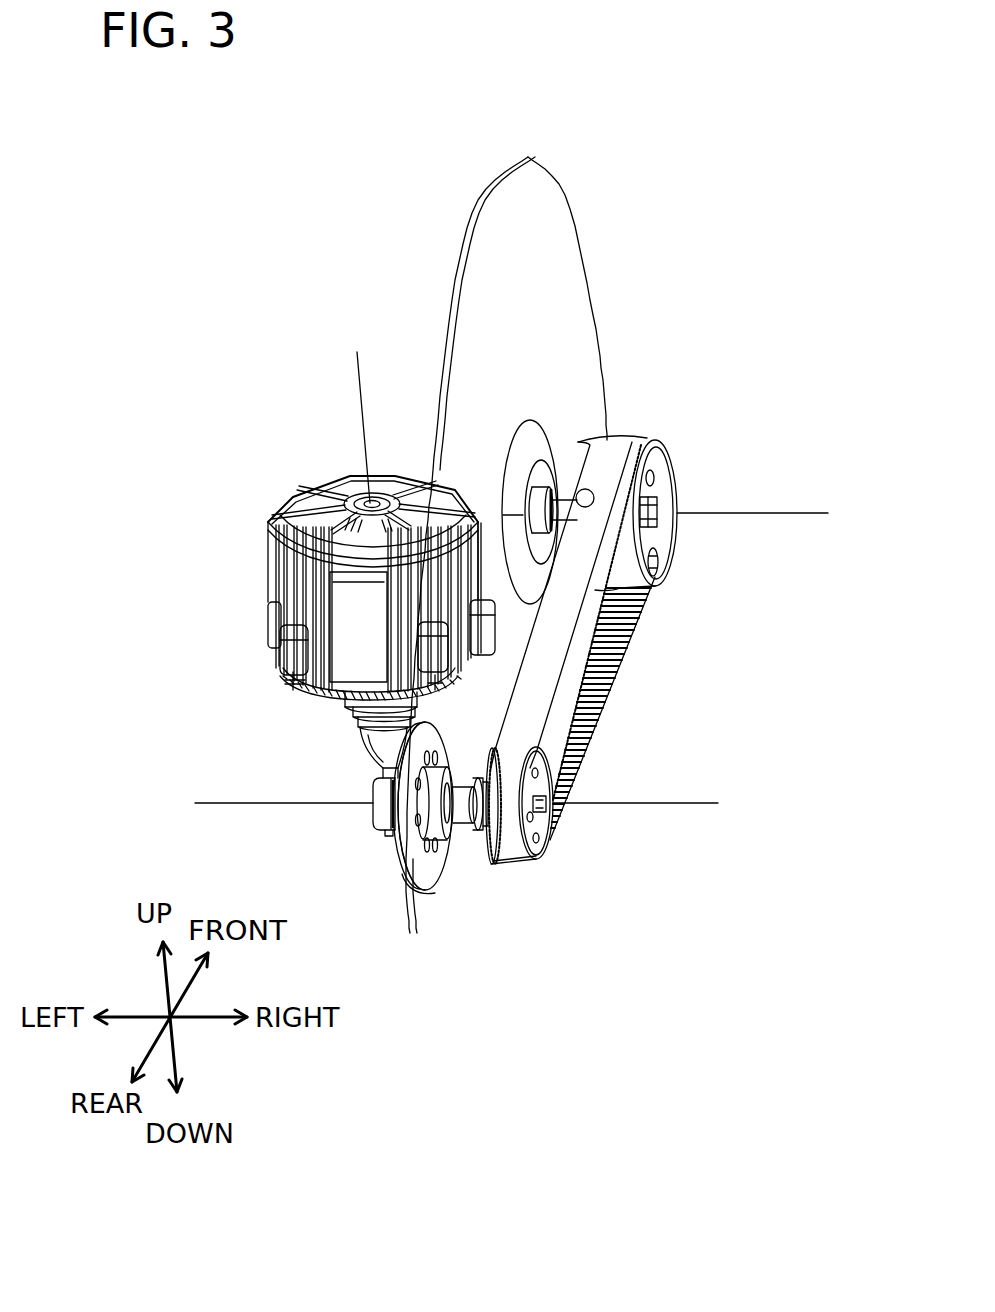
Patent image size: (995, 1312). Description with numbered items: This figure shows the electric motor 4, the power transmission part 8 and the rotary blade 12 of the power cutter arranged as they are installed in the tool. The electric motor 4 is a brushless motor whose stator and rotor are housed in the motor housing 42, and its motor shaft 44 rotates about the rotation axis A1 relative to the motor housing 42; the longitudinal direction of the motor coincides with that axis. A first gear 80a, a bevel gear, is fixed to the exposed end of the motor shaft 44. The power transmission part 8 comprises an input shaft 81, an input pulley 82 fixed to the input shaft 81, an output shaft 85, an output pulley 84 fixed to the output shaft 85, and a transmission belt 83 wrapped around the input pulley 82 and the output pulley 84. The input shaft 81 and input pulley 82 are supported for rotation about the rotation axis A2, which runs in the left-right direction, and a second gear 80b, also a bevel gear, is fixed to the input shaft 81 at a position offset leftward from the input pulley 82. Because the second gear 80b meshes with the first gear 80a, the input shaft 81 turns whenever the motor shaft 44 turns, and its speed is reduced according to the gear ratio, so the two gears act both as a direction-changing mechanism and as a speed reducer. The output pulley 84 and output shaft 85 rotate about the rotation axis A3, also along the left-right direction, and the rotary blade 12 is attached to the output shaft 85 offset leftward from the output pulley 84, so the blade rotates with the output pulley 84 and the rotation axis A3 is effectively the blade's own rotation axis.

The rotary blade 12 is at (462, 243).
The electric motor 4 is at (322, 545).
The motor housing 42 is at (268, 568).
The rotation axis A1 is at (357, 388).
The first gear 80a is at (370, 740).
The second gear 80b is at (418, 890).
The motor shaft 44 is at (385, 775).
The power transmission part 8 is at (615, 619).
The input shaft 81 is at (462, 825).
The input pulley 82 is at (540, 858).
The transmission belt 83 is at (617, 693).
The output pulley 84 is at (665, 442).
The output shaft 85 is at (563, 497).
The rotation axis A2 is at (720, 803).
The rotation axis A3 is at (828, 513).